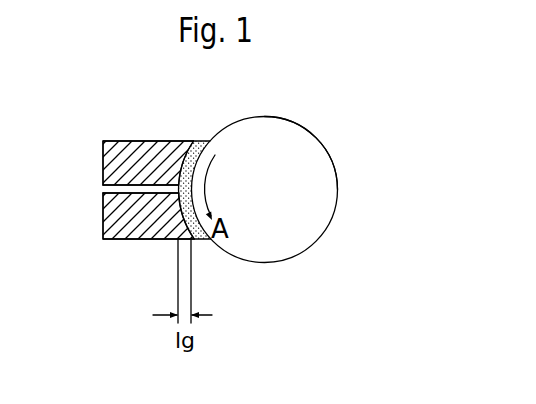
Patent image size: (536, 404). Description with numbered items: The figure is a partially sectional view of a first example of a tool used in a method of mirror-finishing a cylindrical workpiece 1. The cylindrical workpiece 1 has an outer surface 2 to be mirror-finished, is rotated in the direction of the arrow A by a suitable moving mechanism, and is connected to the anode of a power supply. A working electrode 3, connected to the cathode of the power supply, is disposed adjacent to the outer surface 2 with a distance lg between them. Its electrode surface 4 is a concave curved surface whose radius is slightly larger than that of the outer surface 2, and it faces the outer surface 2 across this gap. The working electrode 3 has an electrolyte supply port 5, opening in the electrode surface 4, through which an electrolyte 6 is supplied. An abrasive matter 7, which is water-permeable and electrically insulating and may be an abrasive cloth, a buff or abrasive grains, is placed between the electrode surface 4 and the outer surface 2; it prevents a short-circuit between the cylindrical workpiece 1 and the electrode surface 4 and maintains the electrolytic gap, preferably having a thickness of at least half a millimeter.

The cylindrical workpiece 1 is at (305, 237).
The outer surface 2 is at (312, 132).
The working electrode 3 is at (128, 152).
The electrode surface 4 is at (178, 158).
The electrolyte supply port 5 is at (126, 195).
The electrolyte 6 is at (87, 188).
The abrasive matter 7 is at (202, 236).